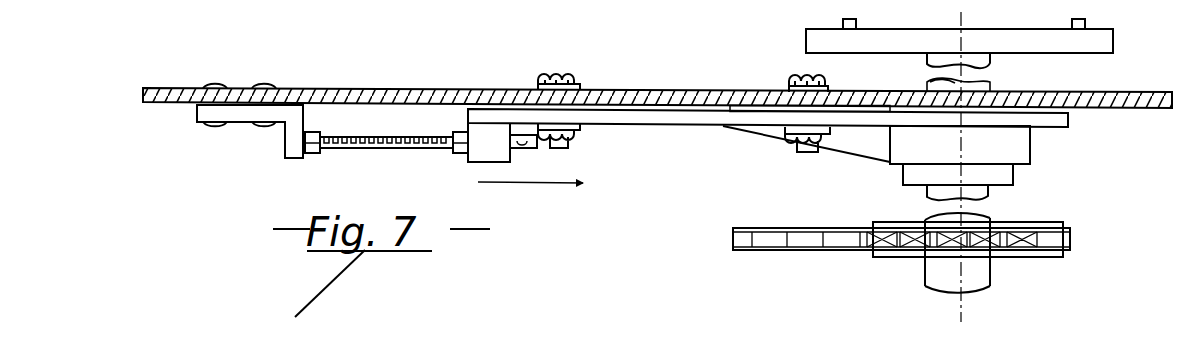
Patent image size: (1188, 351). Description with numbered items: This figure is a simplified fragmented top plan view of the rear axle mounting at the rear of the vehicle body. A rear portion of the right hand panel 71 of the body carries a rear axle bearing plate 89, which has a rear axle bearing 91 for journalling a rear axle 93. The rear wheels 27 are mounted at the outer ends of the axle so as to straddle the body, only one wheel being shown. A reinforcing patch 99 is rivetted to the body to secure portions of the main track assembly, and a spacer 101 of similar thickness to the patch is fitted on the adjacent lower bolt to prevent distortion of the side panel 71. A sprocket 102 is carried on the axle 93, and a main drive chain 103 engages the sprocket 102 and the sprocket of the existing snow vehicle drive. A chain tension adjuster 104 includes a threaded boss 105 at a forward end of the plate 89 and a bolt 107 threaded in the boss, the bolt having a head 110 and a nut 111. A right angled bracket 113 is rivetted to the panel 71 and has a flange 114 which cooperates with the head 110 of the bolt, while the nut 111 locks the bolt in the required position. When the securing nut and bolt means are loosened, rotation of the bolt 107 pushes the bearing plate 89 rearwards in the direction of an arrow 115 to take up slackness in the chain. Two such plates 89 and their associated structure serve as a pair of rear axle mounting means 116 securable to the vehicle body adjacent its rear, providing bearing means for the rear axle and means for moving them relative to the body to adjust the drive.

The rear wheel 27 is at (1097, 31).
The right hand panel 71 is at (1082, 91).
The rear axle bearing plate 89 is at (704, 130).
The rear axle bearing 91 is at (1018, 143).
The rear axle 93 is at (932, 216).
The reinforcing patch 99 is at (750, 104).
The spacer 101 is at (537, 107).
The sprocket 102 is at (1012, 255).
The main drive chain 103 is at (800, 250).
The chain tension adjuster 104 is at (366, 185).
The threaded boss 105 is at (494, 160).
The bolt 107 is at (400, 160).
The head 110 is at (312, 156).
The nut 111 is at (462, 158).
The right angled bracket 113 is at (237, 124).
The flange 114 is at (293, 160).
The arrow 115 is at (547, 186).
The rear axle mounting means 116 is at (632, 156).